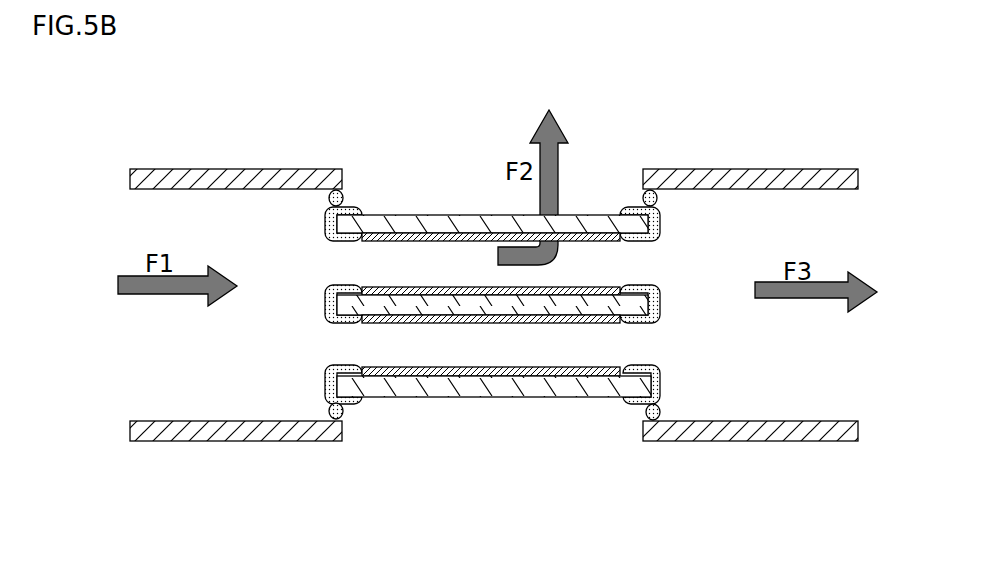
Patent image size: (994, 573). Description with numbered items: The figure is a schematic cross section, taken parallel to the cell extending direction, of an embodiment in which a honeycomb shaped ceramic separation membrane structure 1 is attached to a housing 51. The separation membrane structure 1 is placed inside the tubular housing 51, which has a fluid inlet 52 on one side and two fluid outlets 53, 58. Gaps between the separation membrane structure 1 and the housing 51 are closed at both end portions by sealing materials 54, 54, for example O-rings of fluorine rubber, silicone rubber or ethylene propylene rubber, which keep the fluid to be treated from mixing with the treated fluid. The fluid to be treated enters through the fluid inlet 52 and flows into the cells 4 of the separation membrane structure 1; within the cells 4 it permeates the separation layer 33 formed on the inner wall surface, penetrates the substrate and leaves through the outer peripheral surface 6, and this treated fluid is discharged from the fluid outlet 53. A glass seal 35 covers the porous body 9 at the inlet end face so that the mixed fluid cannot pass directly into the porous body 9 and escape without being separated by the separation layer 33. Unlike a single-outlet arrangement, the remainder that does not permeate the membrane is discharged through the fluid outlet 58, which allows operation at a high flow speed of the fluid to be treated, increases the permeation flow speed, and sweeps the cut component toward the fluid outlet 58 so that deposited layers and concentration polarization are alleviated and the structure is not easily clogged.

The separation membrane structure 1 is at (497, 397).
The cells 4 is at (541, 340).
The outer peripheral surface 6 is at (437, 215).
The porous body 9 is at (443, 386).
The separation layer 33 is at (397, 376).
The glass seal 35 is at (352, 207).
The housing 51 is at (746, 169).
The fluid inlet 52 is at (168, 364).
The fluid outlet 53 is at (616, 187).
The sealing material 54 is at (347, 417).
The fluid outlet 58 is at (833, 224).